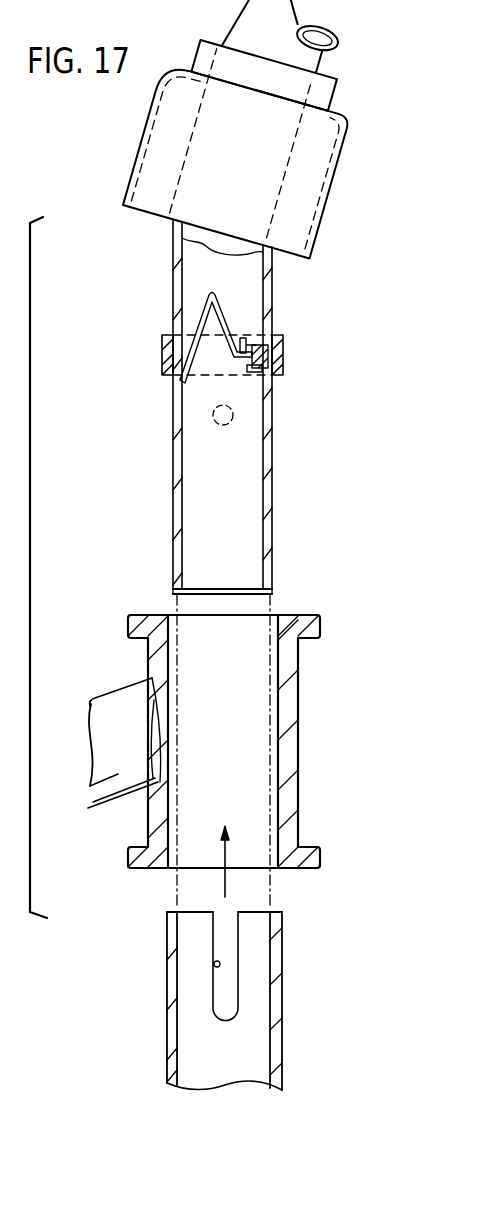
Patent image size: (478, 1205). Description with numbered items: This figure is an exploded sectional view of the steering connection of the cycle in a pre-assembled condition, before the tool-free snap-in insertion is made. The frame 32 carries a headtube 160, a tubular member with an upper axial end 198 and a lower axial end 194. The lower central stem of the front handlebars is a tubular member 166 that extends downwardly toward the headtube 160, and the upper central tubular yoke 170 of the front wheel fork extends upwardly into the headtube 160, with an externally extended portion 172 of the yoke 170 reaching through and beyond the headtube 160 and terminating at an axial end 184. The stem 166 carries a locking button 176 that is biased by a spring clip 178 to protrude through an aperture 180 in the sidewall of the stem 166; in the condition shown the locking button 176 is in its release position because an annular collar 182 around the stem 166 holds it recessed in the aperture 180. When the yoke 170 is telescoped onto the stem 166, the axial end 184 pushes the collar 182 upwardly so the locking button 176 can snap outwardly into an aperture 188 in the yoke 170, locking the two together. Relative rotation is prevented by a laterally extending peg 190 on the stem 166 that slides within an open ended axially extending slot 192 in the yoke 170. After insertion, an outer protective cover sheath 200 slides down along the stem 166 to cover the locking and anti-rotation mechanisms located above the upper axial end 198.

The outer protective cover sheath 200 is at (138, 148).
The tubular member stem 166 is at (272, 462).
The spring clip 178 is at (204, 298).
The locking button 176 is at (262, 346).
The annular collar 182 is at (280, 349).
The aperture 180 is at (281, 377).
The peg 190 is at (223, 425).
The upper axial end 198 is at (308, 614).
The frame 32 is at (124, 688).
The headtube 160 is at (244, 732).
The lower axial end 194 is at (298, 869).
The axial end 184 is at (274, 912).
The externally extended portion 172 is at (278, 923).
The aperture 188 is at (282, 950).
The tubular yoke 170 is at (258, 993).
The slot 192 is at (214, 963).